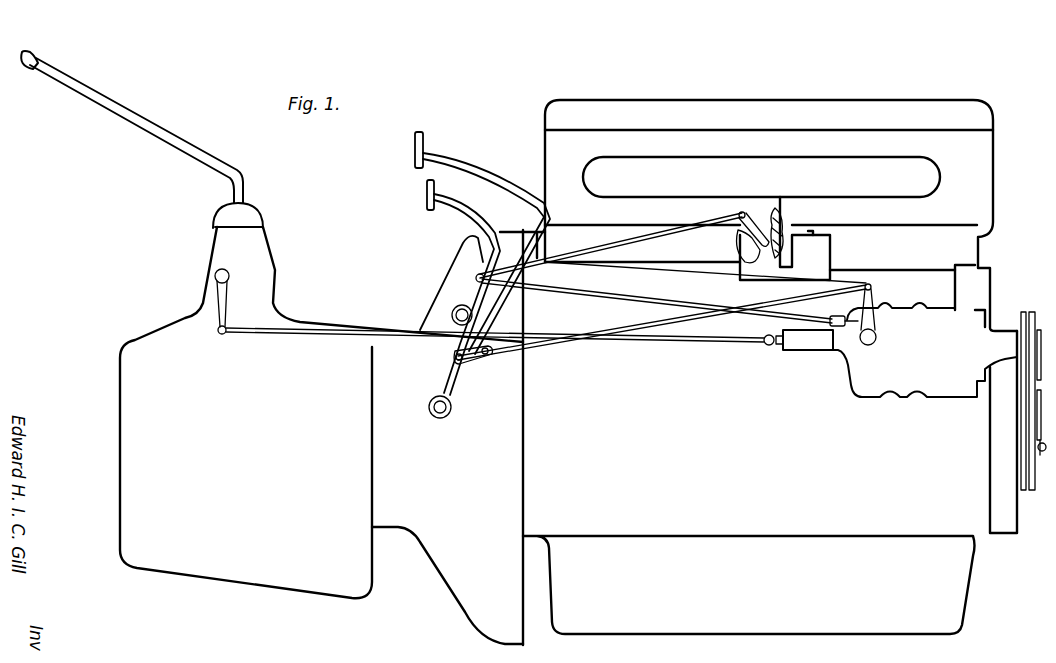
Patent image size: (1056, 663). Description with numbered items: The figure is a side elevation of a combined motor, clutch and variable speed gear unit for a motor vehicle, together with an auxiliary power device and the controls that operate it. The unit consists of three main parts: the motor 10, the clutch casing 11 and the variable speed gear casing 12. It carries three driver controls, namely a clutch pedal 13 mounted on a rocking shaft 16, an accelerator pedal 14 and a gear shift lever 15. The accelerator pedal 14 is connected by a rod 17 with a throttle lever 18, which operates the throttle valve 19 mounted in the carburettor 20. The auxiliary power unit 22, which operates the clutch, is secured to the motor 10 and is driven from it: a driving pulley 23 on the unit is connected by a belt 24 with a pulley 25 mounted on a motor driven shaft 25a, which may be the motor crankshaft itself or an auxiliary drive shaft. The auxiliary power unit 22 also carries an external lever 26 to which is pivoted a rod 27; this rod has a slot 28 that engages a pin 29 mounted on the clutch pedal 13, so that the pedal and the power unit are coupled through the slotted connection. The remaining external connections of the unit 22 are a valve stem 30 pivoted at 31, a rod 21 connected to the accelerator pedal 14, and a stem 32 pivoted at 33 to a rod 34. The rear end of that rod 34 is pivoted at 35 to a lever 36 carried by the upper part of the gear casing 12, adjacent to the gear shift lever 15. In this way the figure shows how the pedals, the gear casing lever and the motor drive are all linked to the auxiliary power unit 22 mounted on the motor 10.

The motor 10 is at (758, 372).
The clutch casing 11 is at (487, 613).
The variable speed gear casing 12 is at (321, 412).
The clutch pedal 13 is at (455, 168).
The accelerator pedal 14 is at (458, 215).
The gear shift lever 15 is at (160, 130).
The rocking shaft 16 is at (436, 420).
The rod 17 is at (596, 246).
The throttle lever 18 is at (752, 224).
The throttle valve 19 is at (782, 226).
The carburettor 20 is at (755, 252).
The rod 21 is at (620, 299).
The auxiliary power unit 22 is at (900, 350).
The driving pulley 23 is at (1021, 314).
The belt 24 is at (1028, 383).
The pulley 25 is at (1028, 482).
The motor driven shaft 25a is at (1040, 441).
The external lever 26 is at (876, 322).
The rod 27 is at (633, 328).
The slot 28 is at (485, 362).
The pin 29 is at (452, 357).
The valve stem 30 is at (840, 334).
The pivot 31 is at (838, 312).
The stem 32 is at (780, 344).
The pivot 33 is at (766, 344).
The rod 34 is at (690, 343).
The pivot 35 is at (218, 337).
The lever 36 is at (216, 298).